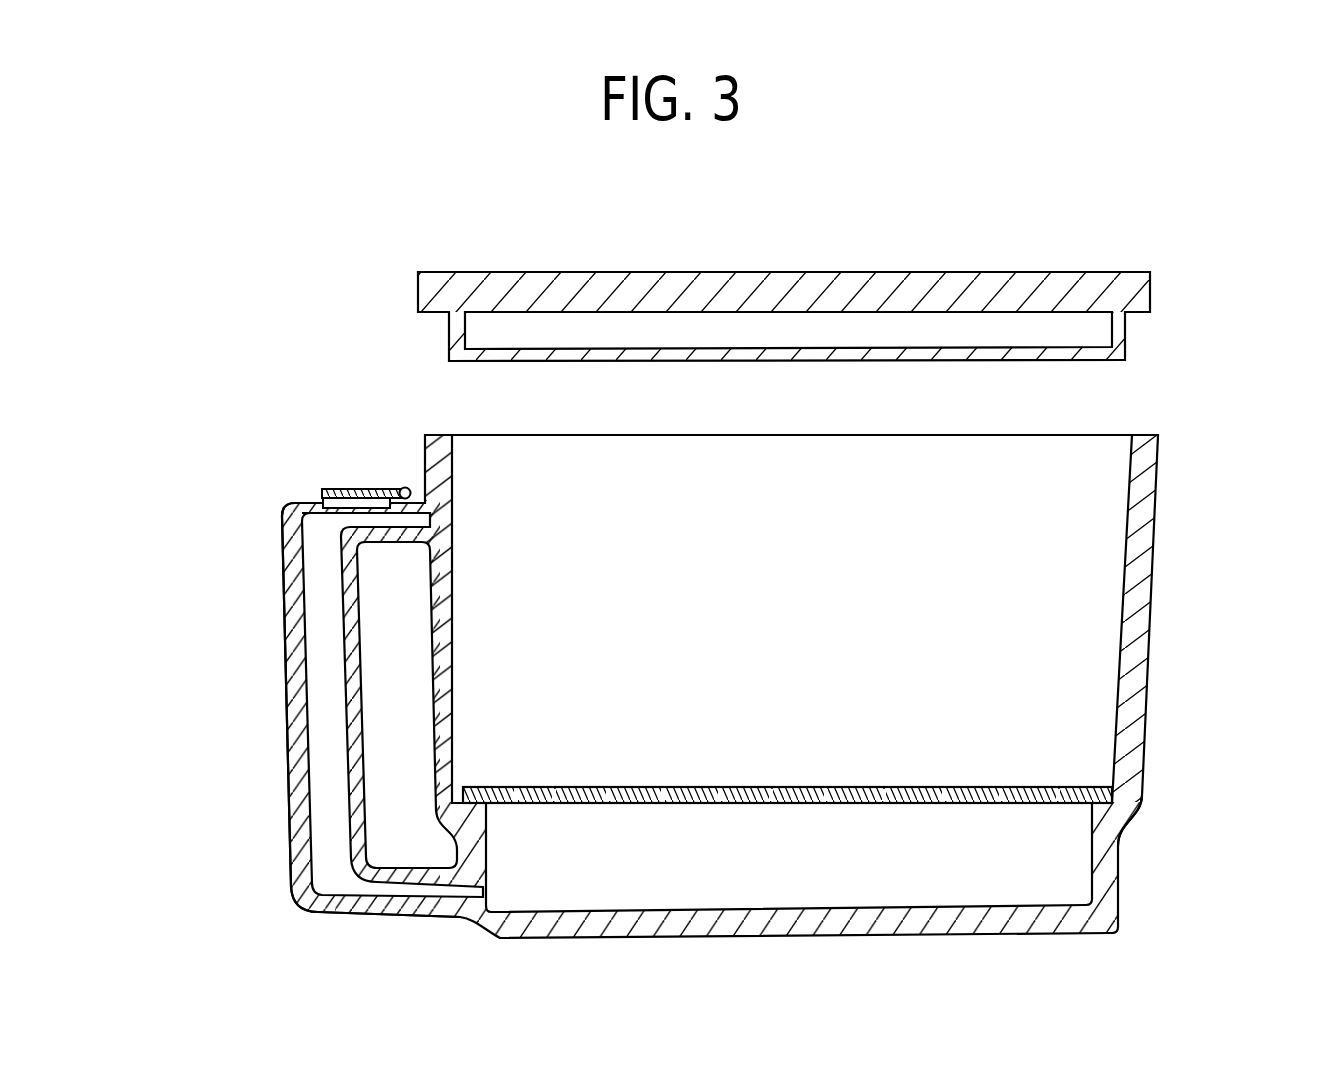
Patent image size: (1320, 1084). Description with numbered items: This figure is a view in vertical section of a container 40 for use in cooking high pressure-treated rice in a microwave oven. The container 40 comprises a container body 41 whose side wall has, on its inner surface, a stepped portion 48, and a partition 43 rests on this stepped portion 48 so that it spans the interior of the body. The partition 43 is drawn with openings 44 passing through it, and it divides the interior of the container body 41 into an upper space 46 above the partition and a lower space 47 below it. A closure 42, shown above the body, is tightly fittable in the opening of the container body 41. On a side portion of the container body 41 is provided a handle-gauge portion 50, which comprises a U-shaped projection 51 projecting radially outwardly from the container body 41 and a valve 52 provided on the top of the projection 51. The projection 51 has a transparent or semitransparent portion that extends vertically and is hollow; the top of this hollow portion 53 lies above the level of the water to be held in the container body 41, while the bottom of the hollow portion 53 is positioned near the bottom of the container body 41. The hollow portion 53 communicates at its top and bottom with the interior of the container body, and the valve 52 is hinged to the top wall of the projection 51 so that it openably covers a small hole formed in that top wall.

The container 40 is at (1056, 190).
The container body 41 is at (780, 686).
The closure 42 is at (1078, 272).
The partition 43 is at (800, 785).
The perforations 44 is at (722, 786).
The upper chamber 46 is at (792, 673).
The lower chamber 47 is at (785, 882).
The stepped portion 48 is at (1115, 836).
The handle-gauge portion 50 is at (331, 657).
The U-shaped projection 51 is at (283, 640).
The valve 52 is at (355, 489).
The hollow portion 53 is at (322, 800).